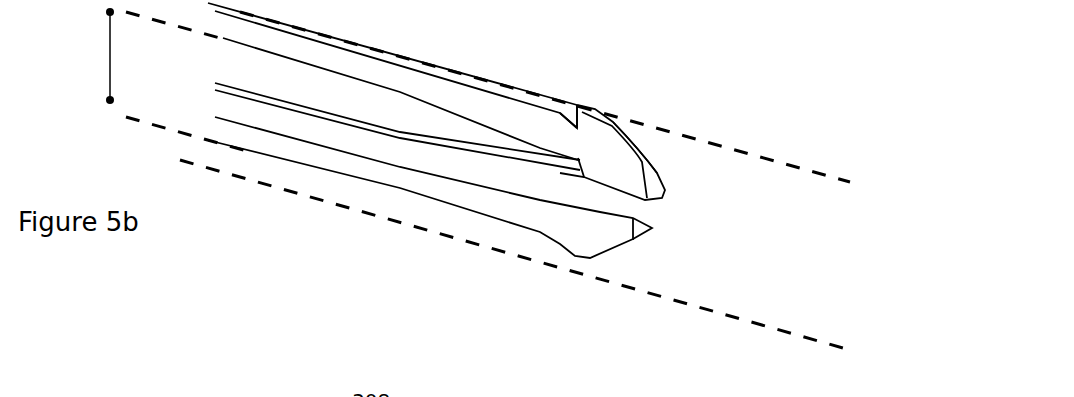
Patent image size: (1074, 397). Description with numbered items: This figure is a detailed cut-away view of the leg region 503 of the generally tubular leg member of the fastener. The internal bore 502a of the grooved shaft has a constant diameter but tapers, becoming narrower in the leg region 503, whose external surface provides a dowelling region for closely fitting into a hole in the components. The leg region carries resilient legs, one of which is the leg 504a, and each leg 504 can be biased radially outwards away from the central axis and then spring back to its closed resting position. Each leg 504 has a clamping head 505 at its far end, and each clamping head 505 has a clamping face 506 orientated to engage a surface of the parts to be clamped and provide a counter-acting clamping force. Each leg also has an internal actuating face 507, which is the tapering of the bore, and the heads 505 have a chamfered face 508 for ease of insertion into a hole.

The internal bore 502a is at (143, 80).
The leg region 503 is at (529, 91).
The leg 504 is at (452, 207).
The resilient leg 504a is at (571, 88).
The clamping head 505 is at (595, 133).
The clamping face 506 is at (572, 112).
The internal actuating face 507 is at (513, 207).
The chamfered face 508 is at (640, 145).